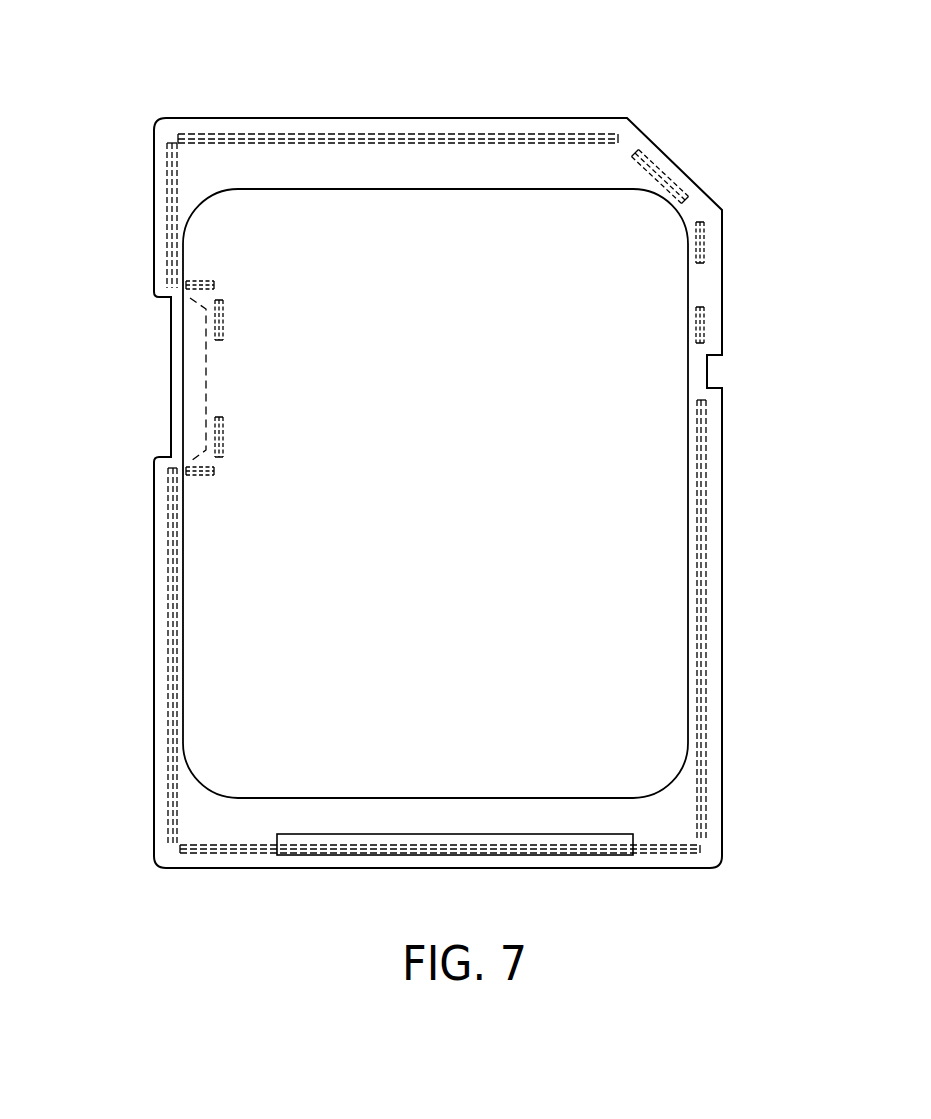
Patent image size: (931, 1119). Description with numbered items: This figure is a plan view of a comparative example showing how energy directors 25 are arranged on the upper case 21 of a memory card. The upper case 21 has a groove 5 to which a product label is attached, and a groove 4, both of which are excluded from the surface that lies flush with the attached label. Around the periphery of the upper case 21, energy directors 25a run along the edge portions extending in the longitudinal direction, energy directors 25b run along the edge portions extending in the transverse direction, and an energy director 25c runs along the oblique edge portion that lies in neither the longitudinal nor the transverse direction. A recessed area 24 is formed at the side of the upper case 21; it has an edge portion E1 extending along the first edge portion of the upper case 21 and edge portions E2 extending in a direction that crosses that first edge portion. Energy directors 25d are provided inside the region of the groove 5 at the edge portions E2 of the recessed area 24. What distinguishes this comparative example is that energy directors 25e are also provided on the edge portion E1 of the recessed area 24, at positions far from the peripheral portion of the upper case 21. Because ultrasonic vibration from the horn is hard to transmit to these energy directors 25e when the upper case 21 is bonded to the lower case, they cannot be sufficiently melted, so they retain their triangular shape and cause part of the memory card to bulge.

The upper case 21 is at (527, 78).
The groove 5 is at (428, 190).
The groove 4 is at (428, 834).
The recessed area 24 is at (190, 360).
The energy director 25 is at (697, 553).
The energy director 25a is at (167, 176).
The energy director 25b is at (215, 133).
The energy director 25c is at (667, 167).
The energy director 25d is at (193, 279).
The energy director 25e is at (224, 325).
The edge portion E1 is at (207, 385).
The edge portion E2 is at (192, 298).